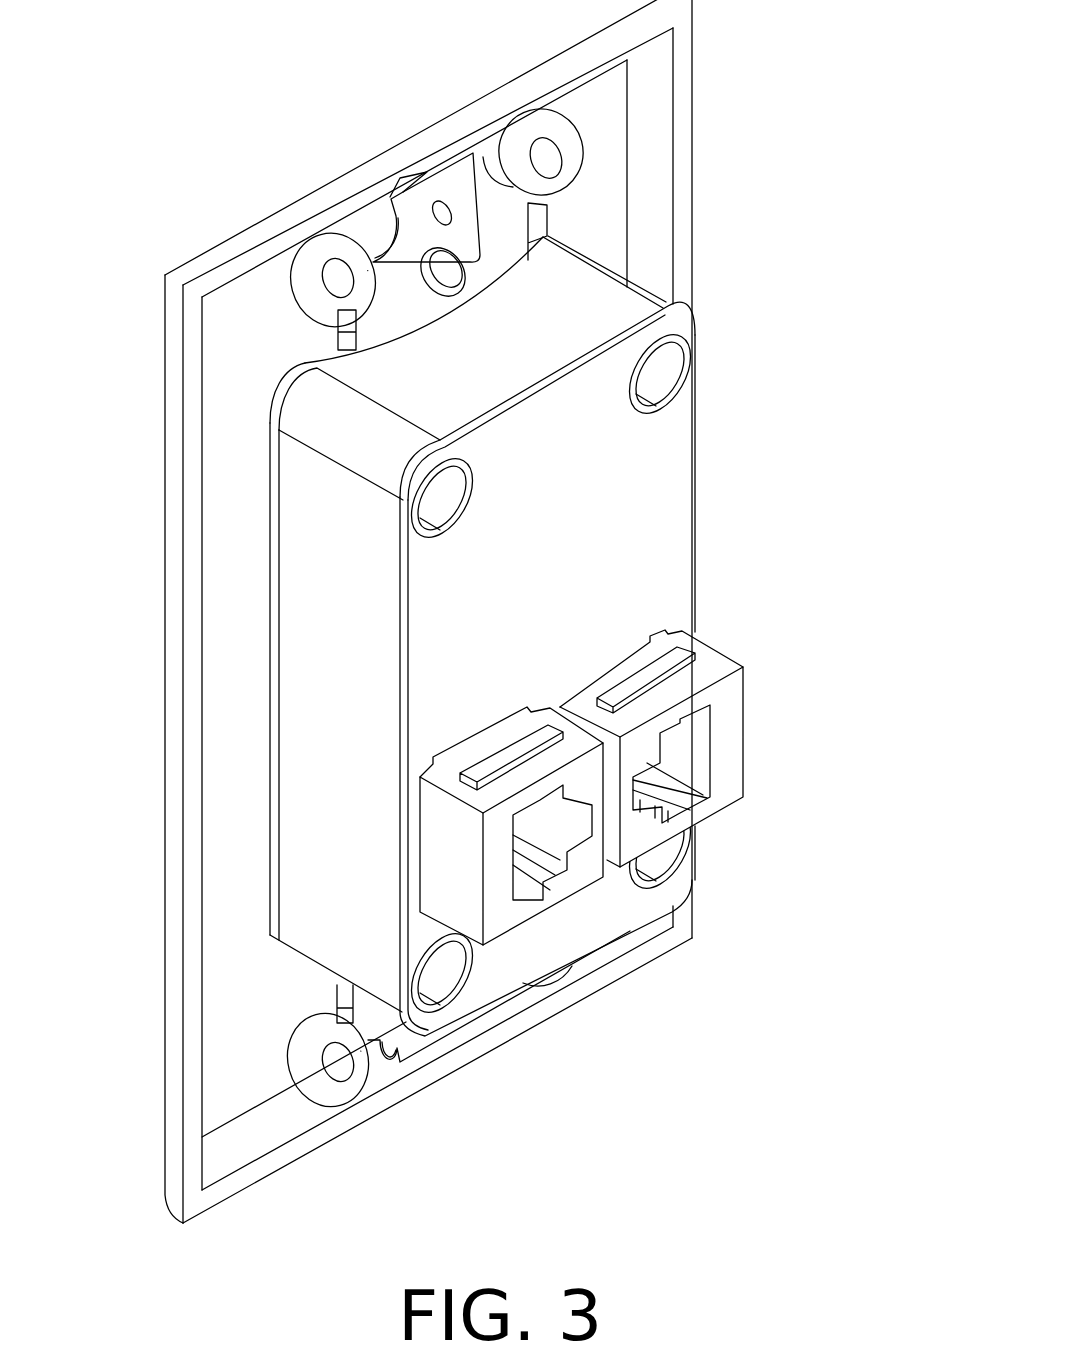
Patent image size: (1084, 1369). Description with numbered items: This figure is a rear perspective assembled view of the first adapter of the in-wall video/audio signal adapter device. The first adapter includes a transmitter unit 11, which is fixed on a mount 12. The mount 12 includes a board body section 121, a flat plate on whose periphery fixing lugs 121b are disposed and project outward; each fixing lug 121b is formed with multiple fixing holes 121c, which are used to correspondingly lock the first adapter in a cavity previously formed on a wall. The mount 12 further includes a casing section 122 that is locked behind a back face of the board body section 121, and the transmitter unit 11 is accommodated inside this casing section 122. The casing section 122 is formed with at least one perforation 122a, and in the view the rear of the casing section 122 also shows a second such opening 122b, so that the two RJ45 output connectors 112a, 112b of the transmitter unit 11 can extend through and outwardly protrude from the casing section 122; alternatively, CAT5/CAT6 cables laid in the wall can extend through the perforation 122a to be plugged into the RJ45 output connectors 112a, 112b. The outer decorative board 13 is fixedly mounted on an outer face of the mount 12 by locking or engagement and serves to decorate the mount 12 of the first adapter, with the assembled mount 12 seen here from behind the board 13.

The transmitter unit 11 is at (343, 658).
The mount 12 is at (852, 252).
The outer decorative board 13 is at (240, 238).
The board body section 121 is at (527, 192).
The fixing lug 121b is at (380, 207).
The fixing hole 121c is at (476, 215).
The casing section 122 is at (686, 468).
The perforation 122a is at (640, 652).
The second jack housing 122b is at (471, 745).
The RJ45 output connector 112a is at (693, 795).
The RJ45 output connector 112b is at (547, 877).